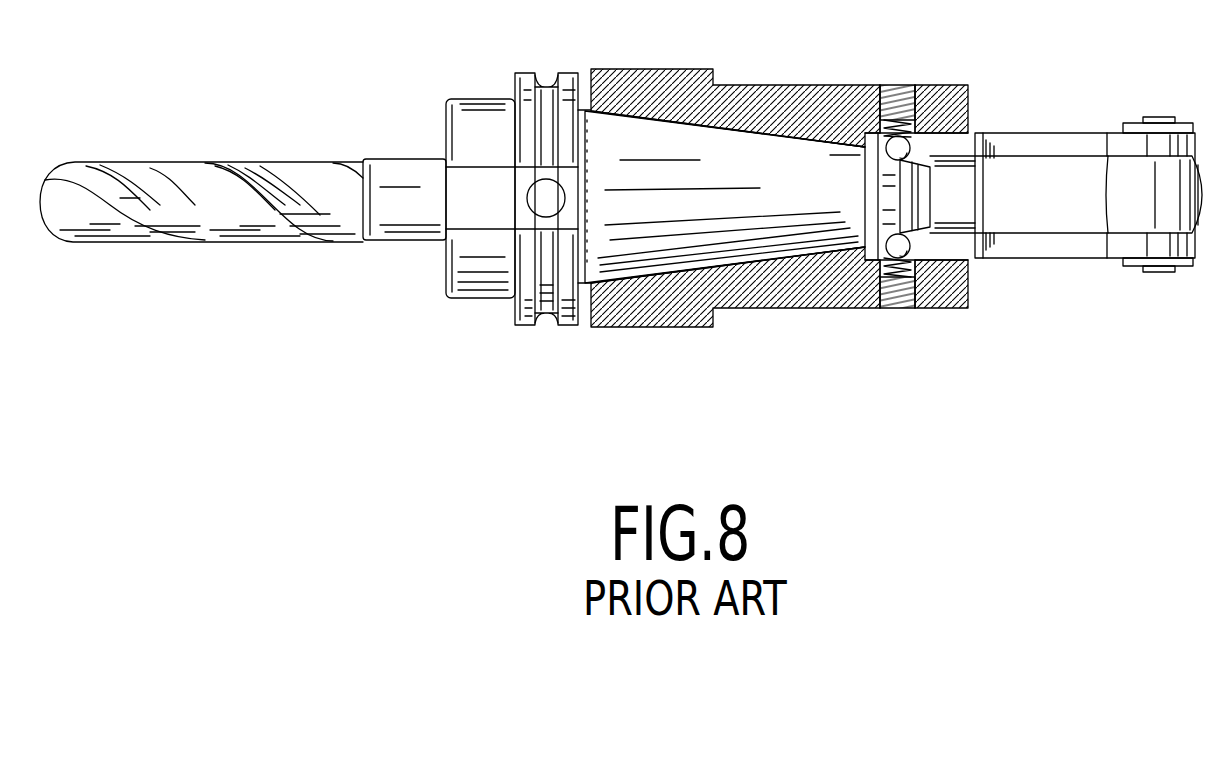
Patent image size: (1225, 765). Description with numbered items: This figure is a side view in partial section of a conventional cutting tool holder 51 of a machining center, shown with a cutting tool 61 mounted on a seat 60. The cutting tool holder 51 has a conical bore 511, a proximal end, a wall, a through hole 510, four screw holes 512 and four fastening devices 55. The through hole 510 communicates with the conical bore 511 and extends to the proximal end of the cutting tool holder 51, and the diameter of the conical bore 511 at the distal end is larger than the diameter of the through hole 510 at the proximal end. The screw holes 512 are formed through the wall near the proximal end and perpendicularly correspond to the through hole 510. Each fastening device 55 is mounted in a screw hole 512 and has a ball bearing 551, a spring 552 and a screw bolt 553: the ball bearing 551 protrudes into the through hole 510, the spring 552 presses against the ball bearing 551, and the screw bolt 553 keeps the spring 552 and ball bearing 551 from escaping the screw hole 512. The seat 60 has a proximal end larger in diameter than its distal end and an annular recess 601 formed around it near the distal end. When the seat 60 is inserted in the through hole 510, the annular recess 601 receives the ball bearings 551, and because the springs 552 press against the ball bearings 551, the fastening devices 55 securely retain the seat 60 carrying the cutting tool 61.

The cutting tool holder 51 is at (728, 297).
The through hole 510 is at (820, 247).
The conical bore 511 is at (633, 266).
The screw hole 512 is at (901, 286).
The fastening device 55 is at (908, 164).
The ball bearing 551 is at (895, 152).
The spring 552 is at (910, 128).
The screw bolt 553 is at (898, 95).
The seat 60 is at (418, 223).
The annular recess 601 is at (901, 186).
The cutting tool 61 is at (162, 172).